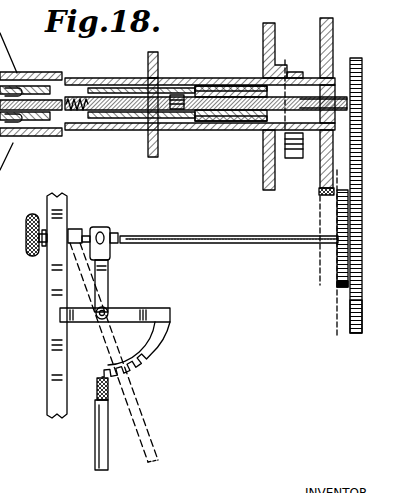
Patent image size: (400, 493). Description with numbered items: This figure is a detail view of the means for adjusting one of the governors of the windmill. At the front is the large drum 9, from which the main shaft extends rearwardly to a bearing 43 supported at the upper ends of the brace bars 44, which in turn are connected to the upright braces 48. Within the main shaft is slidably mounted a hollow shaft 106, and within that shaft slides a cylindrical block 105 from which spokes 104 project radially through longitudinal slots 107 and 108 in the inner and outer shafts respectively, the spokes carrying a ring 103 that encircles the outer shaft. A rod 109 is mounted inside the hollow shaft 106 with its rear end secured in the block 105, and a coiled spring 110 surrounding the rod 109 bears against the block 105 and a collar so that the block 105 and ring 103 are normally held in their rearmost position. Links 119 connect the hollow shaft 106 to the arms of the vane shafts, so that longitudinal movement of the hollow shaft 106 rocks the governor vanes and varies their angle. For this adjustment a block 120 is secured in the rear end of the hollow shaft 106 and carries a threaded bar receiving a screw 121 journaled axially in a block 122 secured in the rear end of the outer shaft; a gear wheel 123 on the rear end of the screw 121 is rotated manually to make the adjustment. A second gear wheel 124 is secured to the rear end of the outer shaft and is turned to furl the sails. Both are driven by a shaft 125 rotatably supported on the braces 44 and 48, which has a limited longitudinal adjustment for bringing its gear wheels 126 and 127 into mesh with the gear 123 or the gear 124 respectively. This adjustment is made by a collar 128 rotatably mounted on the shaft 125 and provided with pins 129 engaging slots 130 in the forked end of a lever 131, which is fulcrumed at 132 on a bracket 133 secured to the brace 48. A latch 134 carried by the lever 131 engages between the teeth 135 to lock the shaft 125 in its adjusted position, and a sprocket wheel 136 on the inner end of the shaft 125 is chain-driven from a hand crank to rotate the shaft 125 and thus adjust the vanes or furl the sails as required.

The drum 9 is at (263, 30).
The bearing 43 is at (293, 72).
The brace bars 44 is at (305, 150).
The upright braces 48 is at (50, 300).
The ring 103 is at (152, 70).
The spokes 104 is at (150, 78).
The cylindrical block 105 is at (175, 120).
The hollow shaft 106 is at (210, 121).
The longitudinal slot 107 is at (118, 120).
The longitudinal slot 108 is at (120, 82).
The rod 109 is at (44, 105).
The coiled spring 110 is at (70, 112).
The links 119 is at (22, 124).
The block 120 is at (206, 69).
The screw 121 is at (250, 90).
The block 122 is at (320, 22).
The gear wheel 123 is at (380, 42).
The gear wheel 124 is at (322, 192).
The shaft 125 is at (255, 228).
The gear wheel 126 is at (337, 274).
The gear wheel 127 is at (350, 320).
The collar 128 is at (104, 207).
The pins 129 is at (108, 238).
The slots 130 is at (103, 232).
The lever 131 is at (100, 438).
The fulcrum 132 is at (108, 311).
The bracket 133 is at (160, 315).
The latch 134 is at (100, 380).
The teeth 135 is at (135, 370).
The sprocket wheel 136 is at (30, 256).